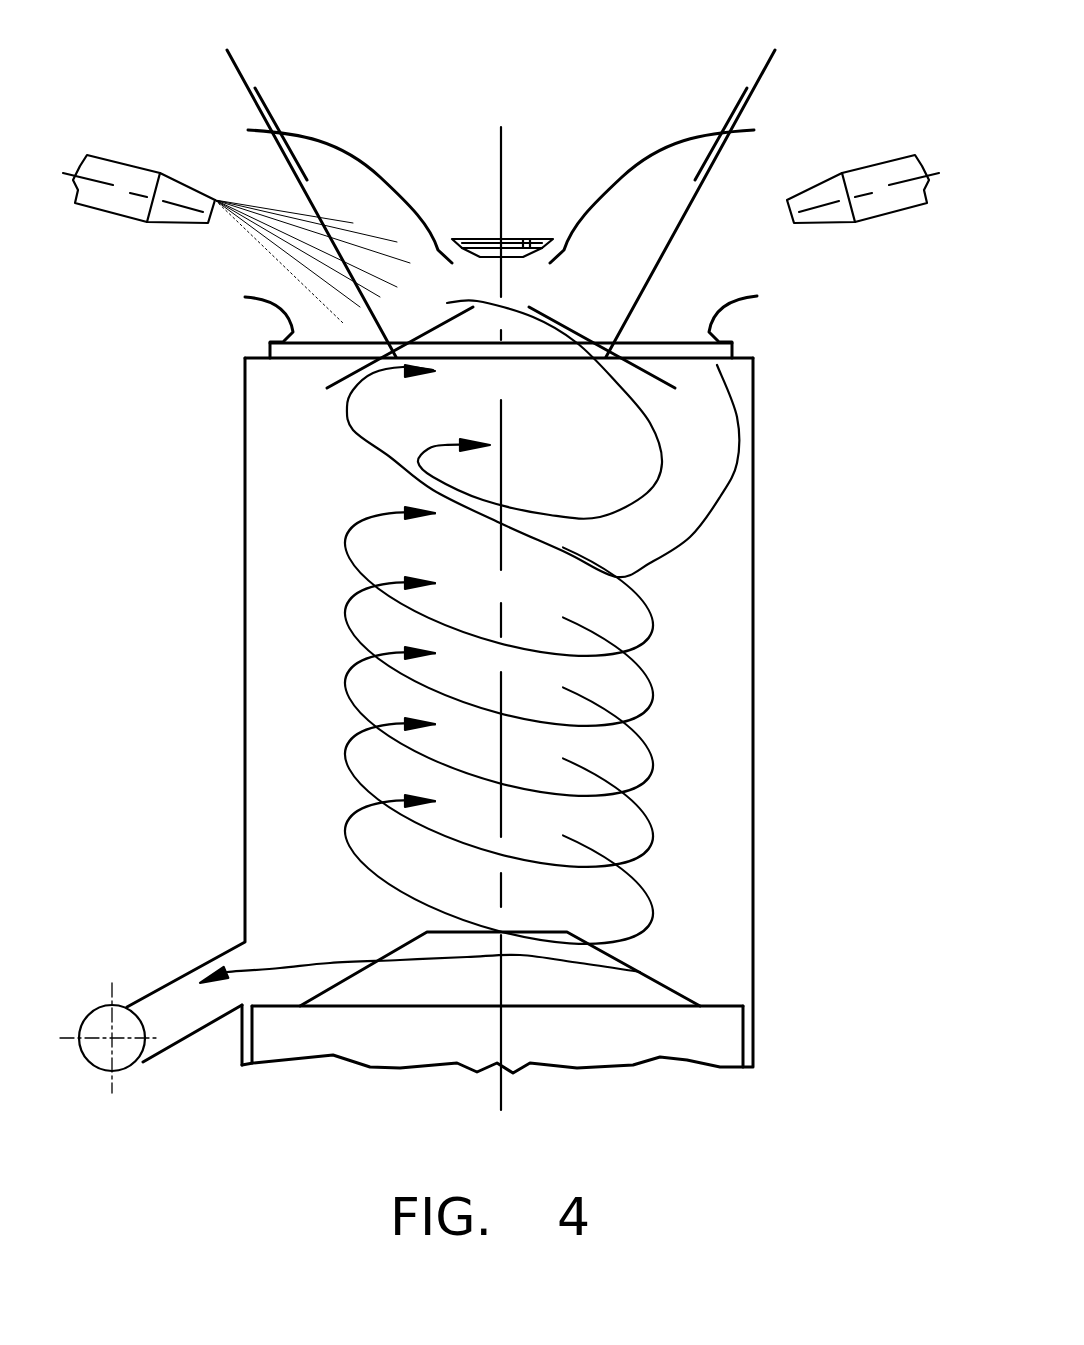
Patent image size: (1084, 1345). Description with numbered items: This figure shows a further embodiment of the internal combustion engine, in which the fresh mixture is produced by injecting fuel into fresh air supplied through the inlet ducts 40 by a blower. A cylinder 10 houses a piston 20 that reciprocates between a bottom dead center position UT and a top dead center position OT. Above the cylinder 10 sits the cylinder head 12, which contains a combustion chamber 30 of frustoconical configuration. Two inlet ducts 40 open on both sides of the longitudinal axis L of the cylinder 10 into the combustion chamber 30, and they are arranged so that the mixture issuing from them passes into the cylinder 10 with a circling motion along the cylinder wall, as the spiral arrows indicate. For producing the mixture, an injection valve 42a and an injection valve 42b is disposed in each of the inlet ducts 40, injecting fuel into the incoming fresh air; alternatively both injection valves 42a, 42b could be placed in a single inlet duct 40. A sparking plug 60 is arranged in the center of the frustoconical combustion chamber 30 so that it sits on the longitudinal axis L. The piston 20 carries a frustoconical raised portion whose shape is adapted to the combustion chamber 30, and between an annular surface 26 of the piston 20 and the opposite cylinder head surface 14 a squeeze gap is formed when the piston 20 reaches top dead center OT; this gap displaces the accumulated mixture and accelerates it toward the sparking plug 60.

The cylinder 10 is at (753, 647).
The cylinder head 12 is at (282, 327).
The cylinder head surface 14 is at (730, 362).
The piston 20 is at (728, 1052).
The annular surface 26 is at (720, 1005).
The combustion chamber 30 is at (450, 243).
The sparking plug 60 is at (530, 243).
The inlet ducts 40 is at (317, 275).
The injection valve 42a is at (128, 177).
The injection valve 42b is at (860, 167).
The longitudinal axis L is at (497, 145).
The top dead center position OT is at (757, 359).
The bottom dead center position UT is at (753, 1005).